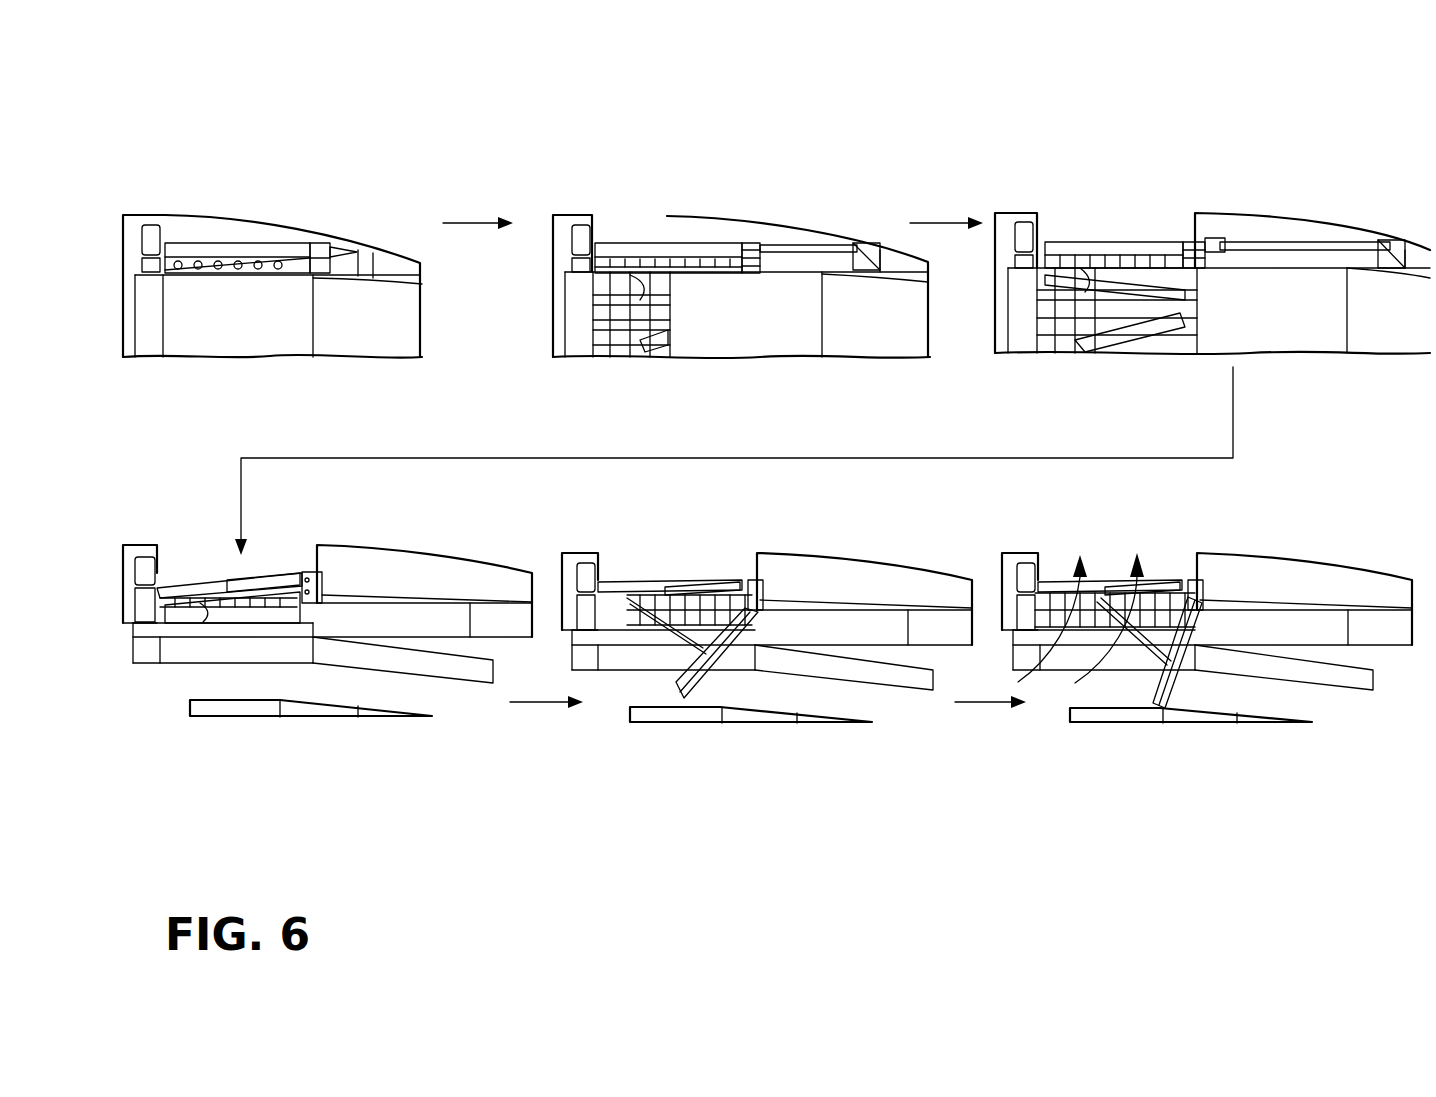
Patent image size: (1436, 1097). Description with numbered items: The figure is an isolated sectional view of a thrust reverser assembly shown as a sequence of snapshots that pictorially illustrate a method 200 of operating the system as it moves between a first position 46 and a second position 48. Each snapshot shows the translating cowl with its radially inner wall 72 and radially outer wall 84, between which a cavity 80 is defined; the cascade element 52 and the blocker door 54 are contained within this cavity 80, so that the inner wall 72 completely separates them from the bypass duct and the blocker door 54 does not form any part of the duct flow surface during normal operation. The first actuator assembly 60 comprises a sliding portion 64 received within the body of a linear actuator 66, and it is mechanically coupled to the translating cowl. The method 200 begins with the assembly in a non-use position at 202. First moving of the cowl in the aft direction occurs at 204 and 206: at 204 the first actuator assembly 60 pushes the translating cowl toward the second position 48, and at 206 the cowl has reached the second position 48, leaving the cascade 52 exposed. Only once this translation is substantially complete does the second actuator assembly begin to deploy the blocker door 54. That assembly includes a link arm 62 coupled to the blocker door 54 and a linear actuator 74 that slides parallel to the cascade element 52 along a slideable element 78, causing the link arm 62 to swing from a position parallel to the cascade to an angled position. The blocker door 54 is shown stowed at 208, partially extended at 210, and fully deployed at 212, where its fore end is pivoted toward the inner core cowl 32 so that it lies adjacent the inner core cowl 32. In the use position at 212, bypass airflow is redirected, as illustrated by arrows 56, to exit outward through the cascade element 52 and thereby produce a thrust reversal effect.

The inner core cowl 32 is at (358, 718).
The first position 46 is at (149, 187).
The second position 48 is at (1418, 238).
The cascade element 52 is at (266, 256).
The blocker door 54 is at (1145, 340).
The arrows 56 is at (1168, 590).
The first actuator assembly 60 is at (346, 233).
The link arm 62 is at (168, 588).
The sliding portion 64 is at (812, 245).
The linear actuator 66 is at (206, 248).
The inner wall 72 is at (283, 277).
The linear actuator 74 is at (277, 583).
The slideable element 78 is at (193, 580).
The cavity 80 is at (205, 226).
The outer wall 84 is at (256, 218).
The method 200 is at (1284, 76).
The non-use position 202 is at (272, 337).
The first moving 204 is at (740, 307).
The first moving 206 is at (1212, 305).
The stowed position 208 is at (326, 649).
The partially extended position 210 is at (767, 677).
The deployed position 212 is at (1207, 658).